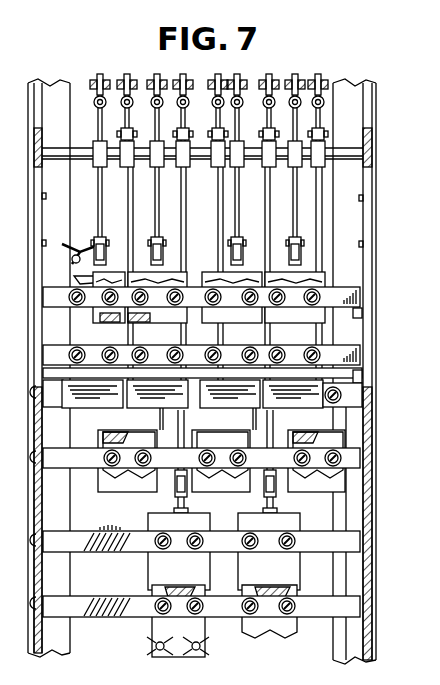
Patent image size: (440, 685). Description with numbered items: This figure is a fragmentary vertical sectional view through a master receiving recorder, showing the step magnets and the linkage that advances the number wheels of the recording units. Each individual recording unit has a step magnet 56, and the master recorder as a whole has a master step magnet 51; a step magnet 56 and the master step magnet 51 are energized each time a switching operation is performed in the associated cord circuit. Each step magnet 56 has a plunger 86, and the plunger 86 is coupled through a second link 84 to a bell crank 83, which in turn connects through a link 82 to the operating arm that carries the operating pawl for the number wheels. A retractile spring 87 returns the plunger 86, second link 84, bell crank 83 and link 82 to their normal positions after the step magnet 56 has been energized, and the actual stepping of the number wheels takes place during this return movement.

The master step magnet 51 is at (166, 578).
The step magnet 56 is at (144, 343).
The link 82 is at (157, 78).
The bell crank 83 is at (123, 171).
The second link 84 is at (220, 208).
The plunger 86 is at (228, 267).
The retractile spring 87 is at (188, 105).